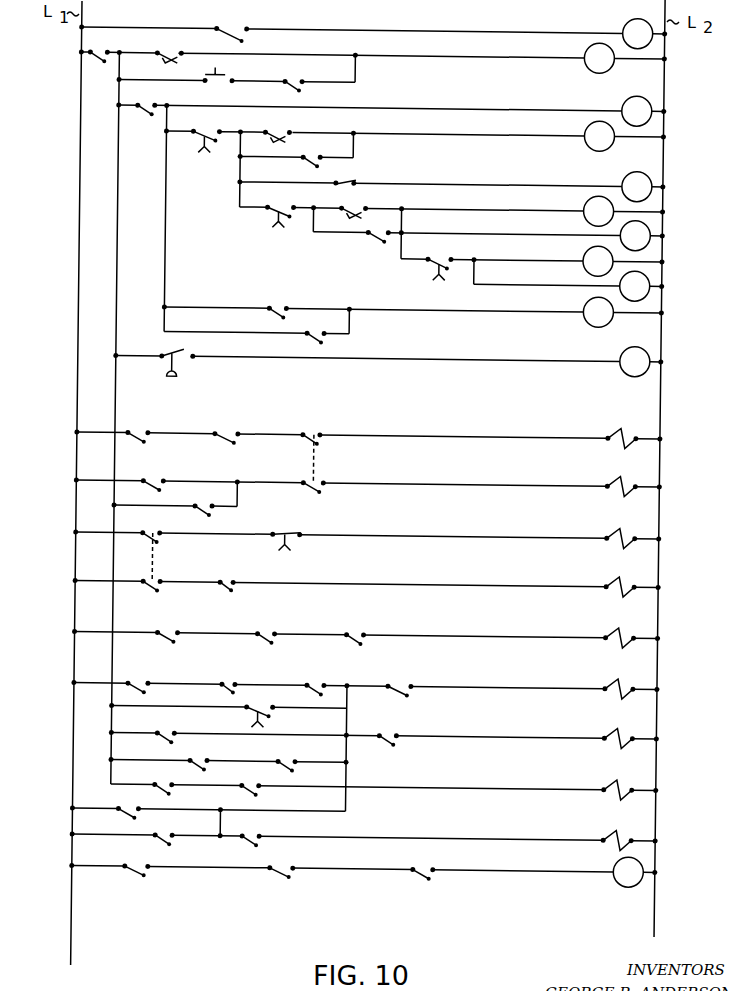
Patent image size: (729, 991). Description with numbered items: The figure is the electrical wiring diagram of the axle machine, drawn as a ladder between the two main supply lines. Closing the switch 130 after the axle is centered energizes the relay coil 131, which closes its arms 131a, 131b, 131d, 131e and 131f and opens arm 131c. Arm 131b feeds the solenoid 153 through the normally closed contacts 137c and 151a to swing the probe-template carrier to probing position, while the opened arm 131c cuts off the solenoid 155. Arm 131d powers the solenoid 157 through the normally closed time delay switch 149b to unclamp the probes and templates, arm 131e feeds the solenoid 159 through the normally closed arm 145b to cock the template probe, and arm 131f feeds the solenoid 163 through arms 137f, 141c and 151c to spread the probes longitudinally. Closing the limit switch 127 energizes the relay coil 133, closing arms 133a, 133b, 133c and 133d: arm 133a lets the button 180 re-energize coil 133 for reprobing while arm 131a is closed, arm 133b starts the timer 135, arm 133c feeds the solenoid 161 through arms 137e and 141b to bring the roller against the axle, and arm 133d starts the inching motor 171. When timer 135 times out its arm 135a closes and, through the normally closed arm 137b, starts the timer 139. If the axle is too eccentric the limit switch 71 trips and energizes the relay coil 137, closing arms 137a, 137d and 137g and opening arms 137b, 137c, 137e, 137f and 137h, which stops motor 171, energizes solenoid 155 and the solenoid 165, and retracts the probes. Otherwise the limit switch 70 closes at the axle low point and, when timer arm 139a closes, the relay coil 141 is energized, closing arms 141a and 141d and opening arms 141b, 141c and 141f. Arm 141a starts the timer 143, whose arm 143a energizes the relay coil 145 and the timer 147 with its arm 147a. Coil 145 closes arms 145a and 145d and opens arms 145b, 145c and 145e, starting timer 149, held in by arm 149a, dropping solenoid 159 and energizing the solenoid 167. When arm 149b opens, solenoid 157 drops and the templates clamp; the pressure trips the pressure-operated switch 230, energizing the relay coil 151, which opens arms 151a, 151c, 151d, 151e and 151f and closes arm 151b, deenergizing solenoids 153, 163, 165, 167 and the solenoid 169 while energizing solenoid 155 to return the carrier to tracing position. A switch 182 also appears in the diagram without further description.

The switch 130 is at (234, 26).
The relay arm 131a is at (98, 49).
The limit switch 127 is at (171, 48).
The button 180 is at (232, 72).
The relay arm 133a is at (291, 83).
The relay arm 133b is at (142, 108).
The timer arm 135a is at (196, 154).
The limit switch 71 is at (280, 132).
The relay arm 137a is at (307, 157).
The relay arm 137b is at (354, 179).
The timer arm 139a is at (259, 219).
The limit switch 70 is at (360, 205).
The relay arm 141a is at (383, 236).
The timer arm 143a is at (446, 253).
The timer 143 is at (650, 218).
The timer 147 is at (650, 269).
The relay arm 145a is at (283, 301).
The relay arm 149a is at (313, 334).
The pressure-operated switch 230 is at (198, 338).
The relay coil 131 is at (628, 15).
The relay coil 133 is at (588, 43).
The timer 135 is at (627, 93).
The relay coil 137 is at (590, 118).
The timer 139 is at (628, 168).
The relay coil 141 is at (590, 193).
The relay coil 145 is at (590, 244).
The timer 149 is at (591, 295).
The relay coil 151 is at (628, 344).
The relay arm 131b is at (140, 430).
The relay contact 137c is at (228, 429).
The relay contact 151a is at (318, 429).
The solenoid 153 is at (613, 428).
The relay arm 131c is at (163, 478).
The relay arm 151b is at (316, 487).
The solenoid 155 is at (613, 476).
The relay arm 137d is at (216, 508).
The relay arm 131d is at (165, 545).
The time delay switch 149b is at (301, 529).
The solenoid 157 is at (614, 526).
The relay arm 131e is at (140, 596).
The relay arm 145b is at (234, 580).
The solenoid 159 is at (615, 576).
The relay arm 133c is at (172, 635).
The relay arm 137e is at (275, 630).
The relay arm 141b is at (362, 631).
The solenoid 161 is at (615, 626).
The relay arm 131f is at (146, 685).
The relay arm 137f is at (238, 680).
The relay arm 141c is at (325, 679).
The relay arm 151c is at (406, 680).
The solenoid 163 is at (616, 677).
The relay 147 pressure contact 147a is at (293, 702).
The relay arm 137g is at (172, 738).
The relay arm 151d is at (396, 733).
The solenoid 165 is at (616, 727).
The relay arm 141d is at (209, 760).
The relay arm 145c is at (296, 758).
The relay arm 145d is at (176, 785).
The relay arm 151e is at (258, 784).
The solenoid 167 is at (616, 778).
The switch 182 is at (127, 816).
The relay arm 145e is at (168, 835).
The relay arm 151f is at (260, 830).
The solenoid 169 is at (616, 829).
The relay arm 133d is at (145, 878).
The relay arm 137h is at (297, 866).
The relay arm 141f is at (433, 867).
The inching motor 171 is at (628, 854).